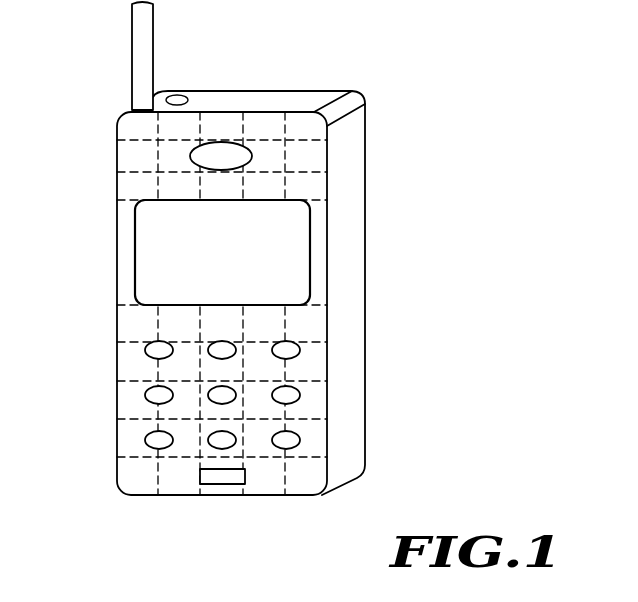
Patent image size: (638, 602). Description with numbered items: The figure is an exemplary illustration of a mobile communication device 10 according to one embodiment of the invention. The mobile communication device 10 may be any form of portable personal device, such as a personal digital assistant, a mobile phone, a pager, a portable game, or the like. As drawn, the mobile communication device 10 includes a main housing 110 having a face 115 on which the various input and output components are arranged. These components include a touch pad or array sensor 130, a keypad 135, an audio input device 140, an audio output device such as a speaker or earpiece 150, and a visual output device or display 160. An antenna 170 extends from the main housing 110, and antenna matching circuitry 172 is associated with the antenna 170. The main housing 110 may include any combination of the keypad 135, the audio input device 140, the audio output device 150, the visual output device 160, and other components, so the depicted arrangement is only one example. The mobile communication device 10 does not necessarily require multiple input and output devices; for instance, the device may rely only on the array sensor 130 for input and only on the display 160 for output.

The mobile communication device 10 is at (445, 96).
The main housing 110 is at (355, 156).
The face 115 is at (310, 318).
The touch pad or array sensor 130 is at (130, 418).
The keypad 135 is at (299, 351).
The audio input device 140 is at (226, 485).
The speaker or earpiece 150 is at (222, 141).
The display 160 is at (311, 252).
The antenna 170 is at (132, 17).
The antenna matching circuitry 172 is at (177, 95).